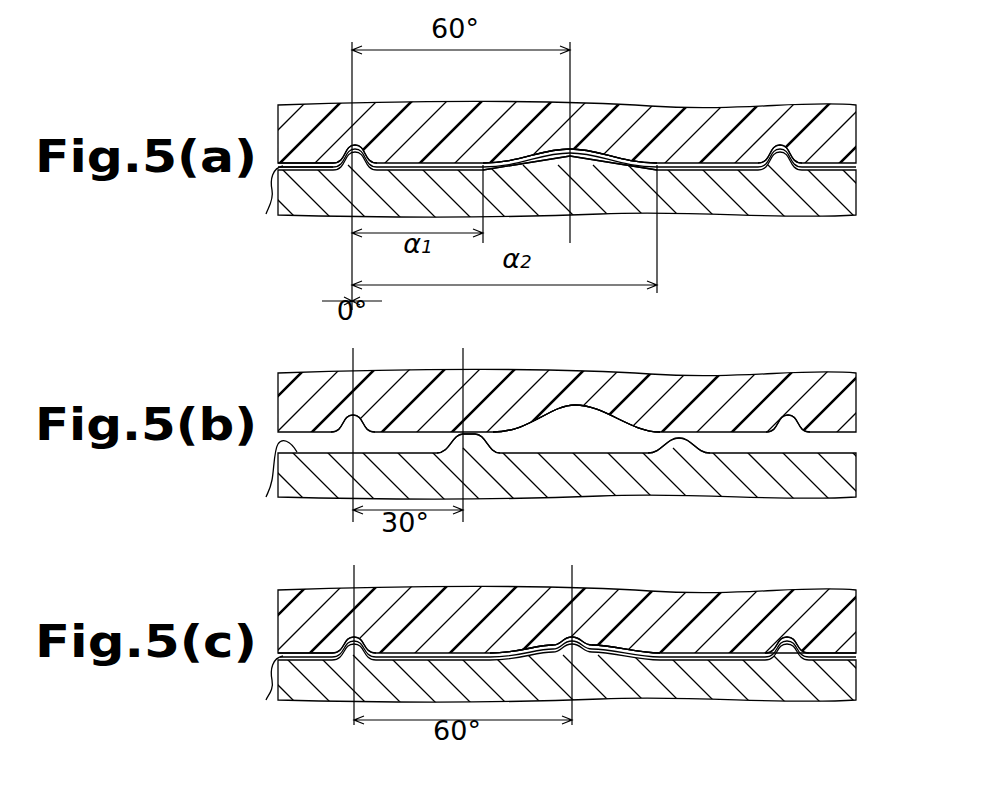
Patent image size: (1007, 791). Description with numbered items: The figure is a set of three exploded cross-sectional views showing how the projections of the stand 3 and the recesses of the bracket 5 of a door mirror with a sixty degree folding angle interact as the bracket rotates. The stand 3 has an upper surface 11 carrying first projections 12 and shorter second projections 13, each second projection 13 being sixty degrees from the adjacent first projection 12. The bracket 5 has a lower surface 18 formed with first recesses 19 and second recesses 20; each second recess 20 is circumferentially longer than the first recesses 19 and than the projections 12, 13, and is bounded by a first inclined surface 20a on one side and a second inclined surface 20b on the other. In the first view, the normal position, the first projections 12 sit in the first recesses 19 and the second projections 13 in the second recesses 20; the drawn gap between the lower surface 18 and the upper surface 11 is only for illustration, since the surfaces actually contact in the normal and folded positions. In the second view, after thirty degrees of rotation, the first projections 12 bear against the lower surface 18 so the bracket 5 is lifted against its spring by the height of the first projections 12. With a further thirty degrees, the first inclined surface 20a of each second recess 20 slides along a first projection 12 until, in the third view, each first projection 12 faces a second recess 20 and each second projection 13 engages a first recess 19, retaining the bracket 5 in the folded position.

In FIG. 5A, the stand 3 is at (856, 190).
In FIG. 5B, the stand 3 is at (856, 470).
In FIG. 5C, the stand 3 is at (856, 668).
In FIG. 5A, the bracket 5 is at (856, 115).
In FIG. 5B, the bracket 5 is at (856, 386).
In FIG. 5C, the bracket 5 is at (856, 603).
In FIG. 5A, the upper surface 11 is at (267, 205).
In FIG. 5B, the upper surface 11 is at (273, 485).
In FIG. 5C, the upper surface 11 is at (267, 691).
In FIG. 5A, the first projection 12 is at (283, 160).
In FIG. 5B, the first projection 12 is at (436, 440).
In FIG. 5C, the first projection 12 is at (561, 640).
In FIG. 5A, the second projection 13 is at (541, 150).
In FIG. 5B, the second projection 13 is at (700, 440).
In FIG. 5C, the second projection 13 is at (372, 650).
In FIG. 5A, the lower surface 18 is at (856, 167).
In FIG. 5B, the lower surface 18 is at (856, 432).
In FIG. 5C, the lower surface 18 is at (856, 656).
In FIG. 5A, the first recess 19 is at (334, 158).
In FIG. 5B, the first recess 19 is at (334, 418).
In FIG. 5C, the first recess 19 is at (334, 640).
In FIG. 5A, the second recess 20 is at (588, 150).
In FIG. 5B, the second recess 20 is at (567, 408).
In FIG. 5C, the second recess 20 is at (592, 645).
In FIG. 5A, the first inclined surface 20a is at (509, 156).
In FIG. 5B, the first inclined surface 20a is at (512, 428).
In FIG. 5C, the first inclined surface 20a is at (513, 646).
In FIG. 5A, the second inclined surface 20b is at (622, 157).
In FIG. 5B, the second inclined surface 20b is at (620, 428).
In FIG. 5C, the second inclined surface 20b is at (625, 646).